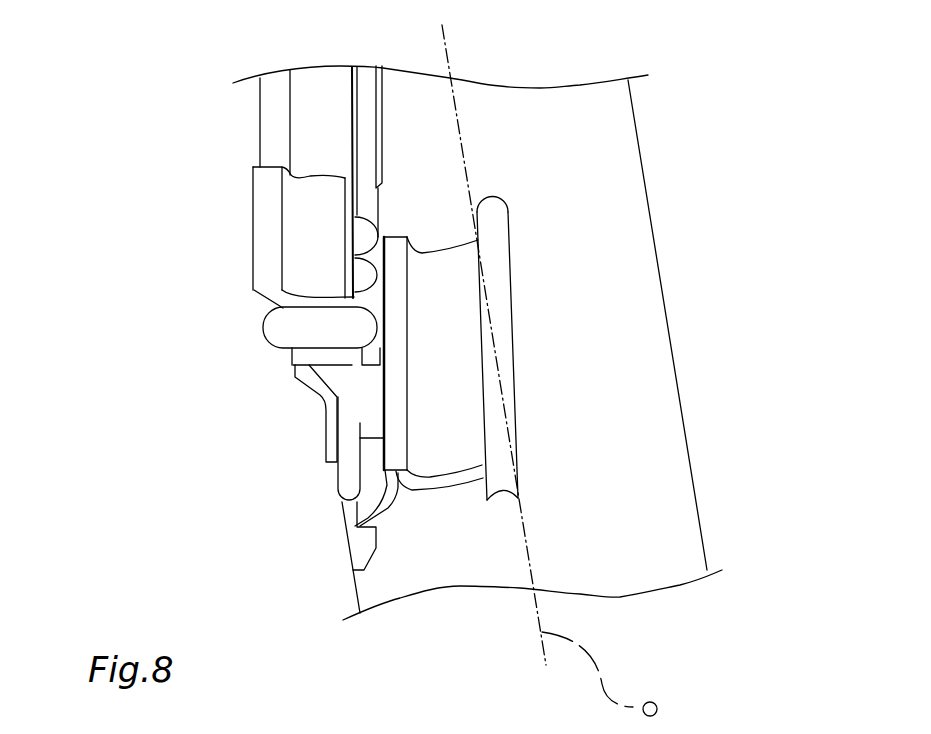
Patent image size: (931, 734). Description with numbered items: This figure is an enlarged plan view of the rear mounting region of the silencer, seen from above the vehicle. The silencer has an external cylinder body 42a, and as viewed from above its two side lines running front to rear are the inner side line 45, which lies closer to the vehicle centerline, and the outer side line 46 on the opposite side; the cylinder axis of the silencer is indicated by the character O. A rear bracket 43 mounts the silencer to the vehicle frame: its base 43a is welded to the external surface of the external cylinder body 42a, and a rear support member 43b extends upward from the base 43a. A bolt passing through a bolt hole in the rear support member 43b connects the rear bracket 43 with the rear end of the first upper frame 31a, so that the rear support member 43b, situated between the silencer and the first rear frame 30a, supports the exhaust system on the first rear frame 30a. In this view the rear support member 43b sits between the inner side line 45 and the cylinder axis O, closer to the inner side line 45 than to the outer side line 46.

The first rear frame 30a is at (200, 186).
The first upper frame 31a is at (303, 127).
The external cylinder body 42a is at (647, 377).
The rear bracket 43 is at (458, 281).
The base 43a is at (437, 267).
The rear support member 43b is at (391, 373).
The inner side line 45 is at (353, 595).
The outer side line 46 is at (653, 223).